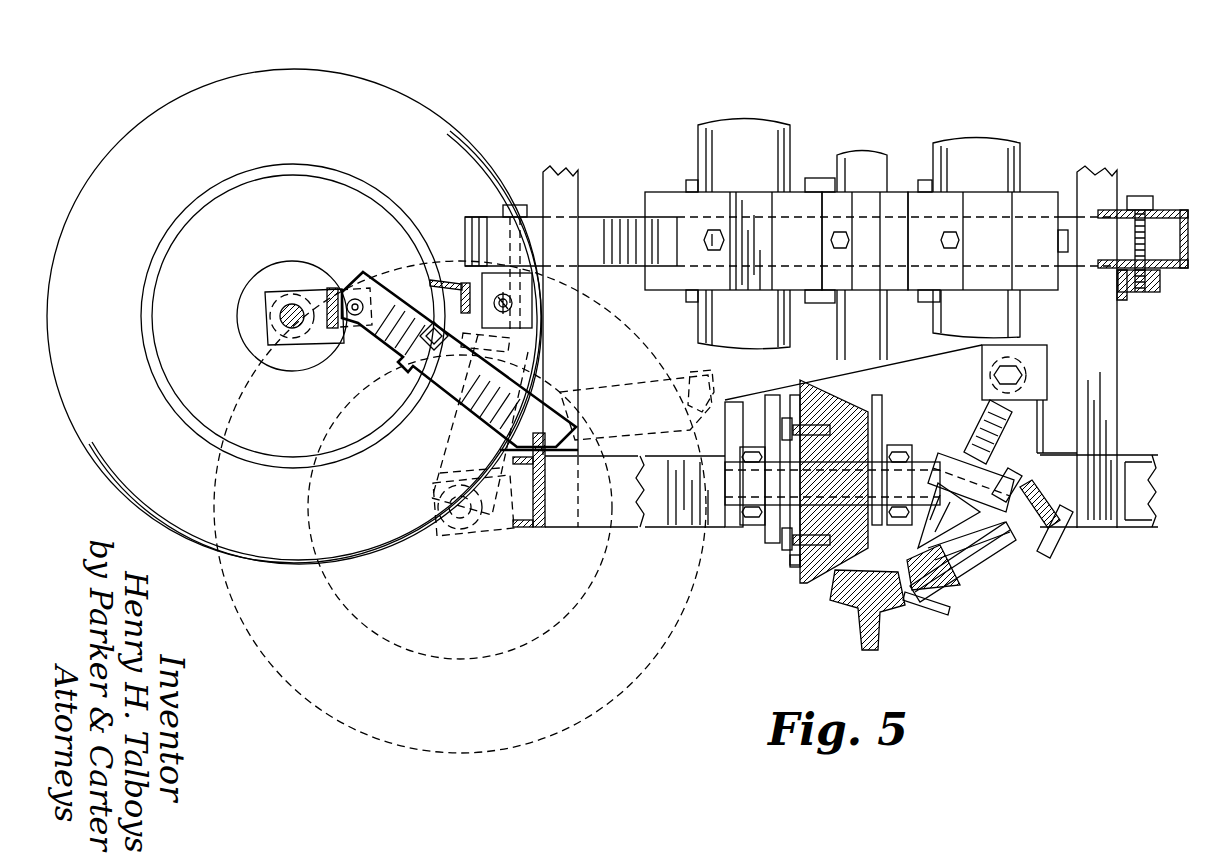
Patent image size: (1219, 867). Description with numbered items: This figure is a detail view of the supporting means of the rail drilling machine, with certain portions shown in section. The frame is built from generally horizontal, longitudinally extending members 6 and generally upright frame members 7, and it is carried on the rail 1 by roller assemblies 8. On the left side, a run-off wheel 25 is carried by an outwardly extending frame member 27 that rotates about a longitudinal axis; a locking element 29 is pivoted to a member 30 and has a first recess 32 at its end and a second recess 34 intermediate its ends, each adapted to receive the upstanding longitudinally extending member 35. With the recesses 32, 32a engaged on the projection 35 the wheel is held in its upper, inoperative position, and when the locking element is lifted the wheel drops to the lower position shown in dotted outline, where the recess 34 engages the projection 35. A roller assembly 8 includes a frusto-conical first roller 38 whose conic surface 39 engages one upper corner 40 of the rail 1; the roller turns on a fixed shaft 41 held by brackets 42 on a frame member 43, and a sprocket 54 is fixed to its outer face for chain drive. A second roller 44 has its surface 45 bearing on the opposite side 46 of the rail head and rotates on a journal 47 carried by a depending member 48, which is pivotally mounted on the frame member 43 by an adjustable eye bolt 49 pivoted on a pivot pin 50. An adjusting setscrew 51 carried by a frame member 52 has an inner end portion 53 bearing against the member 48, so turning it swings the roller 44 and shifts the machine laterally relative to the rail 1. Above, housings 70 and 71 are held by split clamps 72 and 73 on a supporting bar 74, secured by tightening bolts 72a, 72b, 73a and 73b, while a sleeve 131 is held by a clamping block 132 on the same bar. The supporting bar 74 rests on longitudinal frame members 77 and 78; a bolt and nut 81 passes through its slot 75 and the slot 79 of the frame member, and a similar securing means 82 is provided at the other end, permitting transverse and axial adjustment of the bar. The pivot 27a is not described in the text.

The rail 1 is at (862, 645).
The horizontal frame member 6 is at (530, 530).
The upright frame member 7 is at (556, 182).
The roller assembly 8 is at (798, 588).
The run-off wheel 25 is at (450, 132).
The outwardly extending frame member 27 is at (263, 312).
The pivot bolt 27a is at (512, 308).
The locking element 29 is at (430, 396).
The member 30 is at (322, 290).
The first recess 32 is at (356, 316).
The first recess 32a is at (563, 440).
The second recess 34 is at (400, 364).
The upstanding longitudinally extending member 35 is at (533, 465).
The first roller 38 is at (815, 592).
The conic surface 39 is at (870, 565).
The upper corner of the rail 40 is at (842, 612).
The fixed shaft 41 is at (735, 487).
The bracket 42 is at (760, 535).
The frame member 43 is at (925, 372).
The second roller 44 is at (935, 602).
The roller surface 45 is at (992, 548).
The opposite side of the rail head 46 is at (905, 617).
The journal 47 is at (965, 582).
The depending member 48 is at (992, 460).
The adjustable eye bolt 49 is at (1010, 402).
The pivot pin 50 is at (1012, 372).
The adjusting setscrew 51 is at (1062, 535).
The frame member 52 is at (1022, 484).
The inner end portion 53 is at (985, 478).
The sprocket 54 is at (792, 565).
The housing 70 is at (736, 122).
The housing 71 is at (968, 138).
The split clamp 72 is at (658, 194).
The tightening bolt 72a is at (690, 180).
The tightening bolt 72b is at (712, 252).
The split clamp 73 is at (978, 216).
The tightening bolt 73a is at (925, 180).
The tightening bolt 73b is at (948, 250).
The supporting bar 74 is at (592, 222).
The slot 75 is at (1172, 212).
The longitudinally extending frame member 77 is at (1126, 300).
The longitudinally extending frame member 78 is at (540, 304).
The slot 79 is at (1162, 268).
The bolt and nut 81 is at (1145, 198).
The securing means 82 is at (512, 204).
The sleeve 131 is at (855, 152).
The clamping block 132 is at (835, 205).